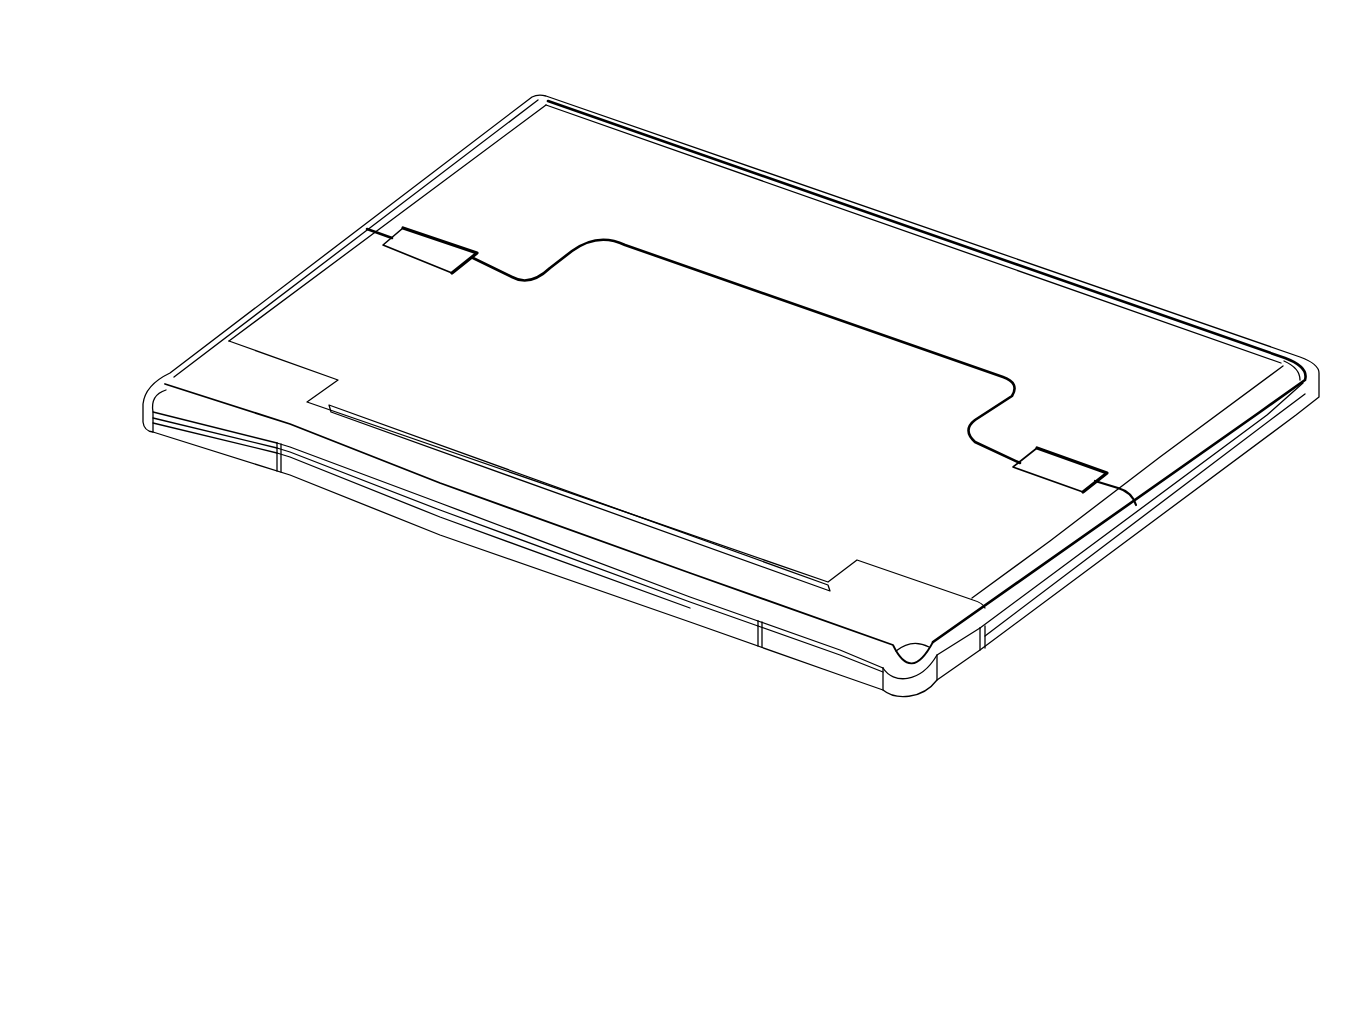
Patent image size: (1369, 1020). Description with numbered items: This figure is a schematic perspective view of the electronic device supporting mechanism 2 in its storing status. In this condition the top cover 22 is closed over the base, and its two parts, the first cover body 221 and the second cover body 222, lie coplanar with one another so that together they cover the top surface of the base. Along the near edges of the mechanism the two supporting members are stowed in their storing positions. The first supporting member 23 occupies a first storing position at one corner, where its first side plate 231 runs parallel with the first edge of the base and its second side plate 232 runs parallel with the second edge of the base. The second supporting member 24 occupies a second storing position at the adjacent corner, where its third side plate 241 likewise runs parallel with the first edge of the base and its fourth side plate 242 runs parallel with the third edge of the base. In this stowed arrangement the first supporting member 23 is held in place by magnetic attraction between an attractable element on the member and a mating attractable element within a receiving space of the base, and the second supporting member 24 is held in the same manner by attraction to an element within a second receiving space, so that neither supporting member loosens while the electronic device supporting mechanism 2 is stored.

The electronic device supporting mechanism 2 is at (1179, 164).
The top cover 22 is at (735, 382).
The first cover body 221 is at (1040, 523).
The second cover body 222 is at (809, 383).
The first supporting member 23 is at (177, 425).
The first side plate 231 is at (218, 447).
The second side plate 232 is at (150, 380).
The second supporting member 24 is at (1031, 584).
The third side plate 241 is at (828, 662).
The fourth side plate 242 is at (960, 662).